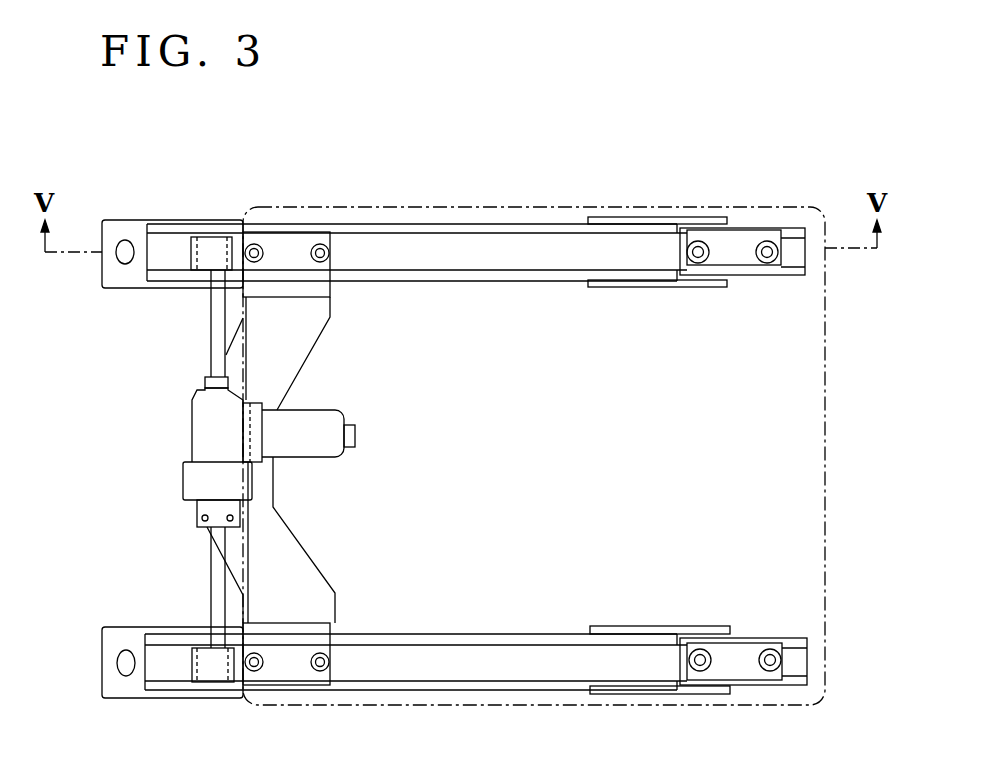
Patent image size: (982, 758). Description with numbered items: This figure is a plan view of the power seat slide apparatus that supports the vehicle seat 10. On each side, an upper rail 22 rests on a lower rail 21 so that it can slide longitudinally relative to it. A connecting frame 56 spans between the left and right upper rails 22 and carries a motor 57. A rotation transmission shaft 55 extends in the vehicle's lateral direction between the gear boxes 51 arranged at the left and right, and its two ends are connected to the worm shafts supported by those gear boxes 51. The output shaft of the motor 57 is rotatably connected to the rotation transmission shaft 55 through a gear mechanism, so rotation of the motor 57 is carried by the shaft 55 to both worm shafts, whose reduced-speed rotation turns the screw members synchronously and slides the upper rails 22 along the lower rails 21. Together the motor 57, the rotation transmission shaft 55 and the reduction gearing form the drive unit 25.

The seat 10 is at (510, 198).
The lower rail 21 is at (636, 226).
The upper rail 22 is at (790, 228).
The drive unit 25 is at (178, 391).
The gear box 51 is at (203, 236).
The rotation transmission shaft 55 is at (217, 568).
The connecting frame 56 is at (297, 562).
The motor 57 is at (332, 412).